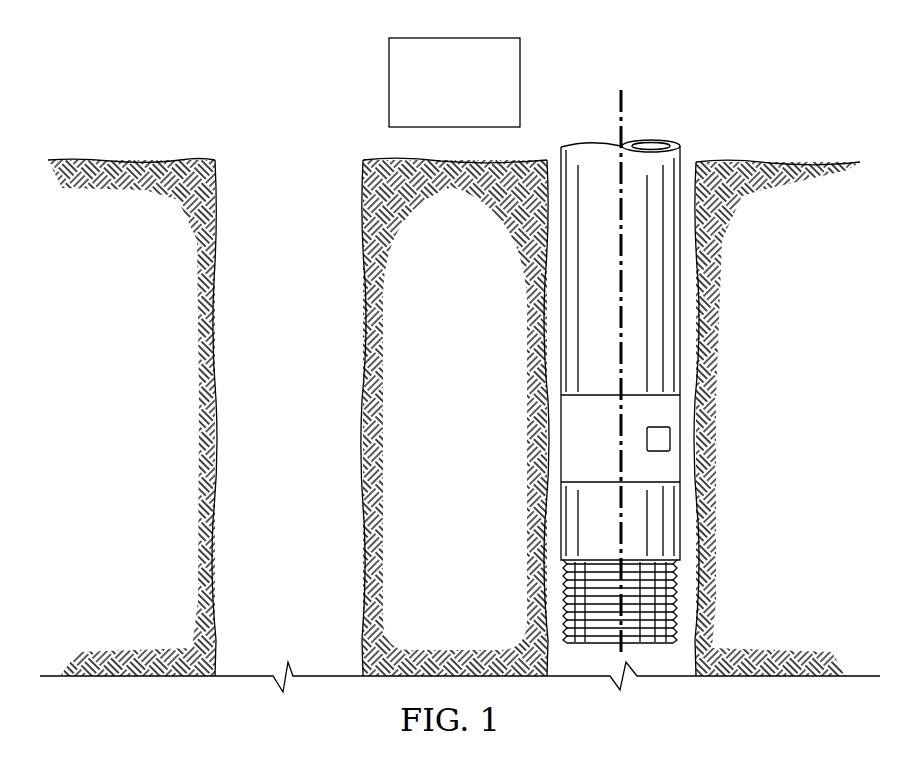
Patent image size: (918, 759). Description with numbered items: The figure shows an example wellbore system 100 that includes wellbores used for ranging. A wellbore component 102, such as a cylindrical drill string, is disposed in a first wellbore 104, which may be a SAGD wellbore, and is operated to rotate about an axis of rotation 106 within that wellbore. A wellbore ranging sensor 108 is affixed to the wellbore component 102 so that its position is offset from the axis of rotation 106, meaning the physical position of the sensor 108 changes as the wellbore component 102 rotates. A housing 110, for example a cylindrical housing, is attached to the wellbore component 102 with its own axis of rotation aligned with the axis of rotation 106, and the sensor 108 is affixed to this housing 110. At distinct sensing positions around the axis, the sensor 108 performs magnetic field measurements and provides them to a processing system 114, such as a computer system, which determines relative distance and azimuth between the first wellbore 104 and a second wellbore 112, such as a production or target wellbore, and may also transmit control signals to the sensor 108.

The wellbore system 100 is at (263, 82).
The wellbore component 102 is at (561, 378).
The first wellbore 104 is at (697, 378).
The axis of rotation 106 is at (622, 112).
The wellbore ranging sensor 108 is at (670, 438).
The housing 110 is at (571, 497).
The second wellbore 112 is at (215, 390).
The processing system 114 is at (476, 96).